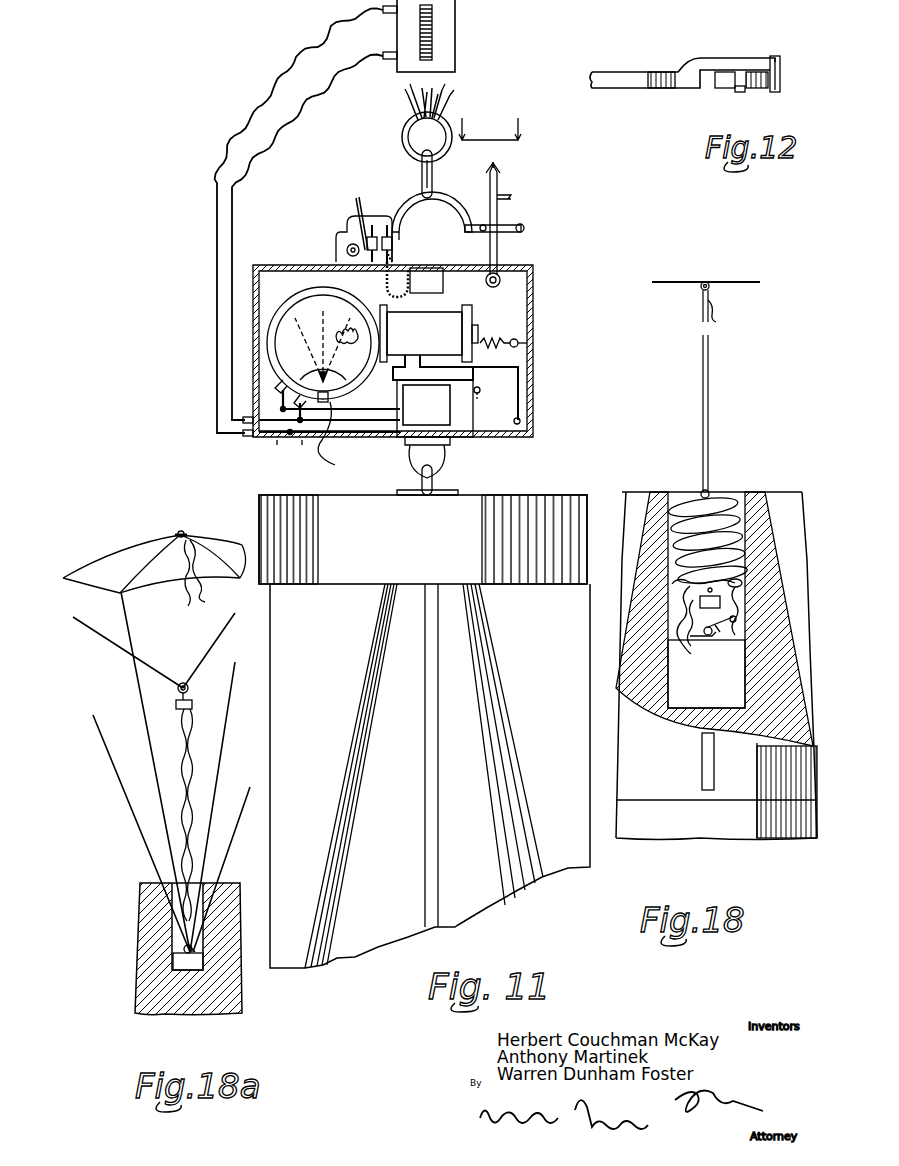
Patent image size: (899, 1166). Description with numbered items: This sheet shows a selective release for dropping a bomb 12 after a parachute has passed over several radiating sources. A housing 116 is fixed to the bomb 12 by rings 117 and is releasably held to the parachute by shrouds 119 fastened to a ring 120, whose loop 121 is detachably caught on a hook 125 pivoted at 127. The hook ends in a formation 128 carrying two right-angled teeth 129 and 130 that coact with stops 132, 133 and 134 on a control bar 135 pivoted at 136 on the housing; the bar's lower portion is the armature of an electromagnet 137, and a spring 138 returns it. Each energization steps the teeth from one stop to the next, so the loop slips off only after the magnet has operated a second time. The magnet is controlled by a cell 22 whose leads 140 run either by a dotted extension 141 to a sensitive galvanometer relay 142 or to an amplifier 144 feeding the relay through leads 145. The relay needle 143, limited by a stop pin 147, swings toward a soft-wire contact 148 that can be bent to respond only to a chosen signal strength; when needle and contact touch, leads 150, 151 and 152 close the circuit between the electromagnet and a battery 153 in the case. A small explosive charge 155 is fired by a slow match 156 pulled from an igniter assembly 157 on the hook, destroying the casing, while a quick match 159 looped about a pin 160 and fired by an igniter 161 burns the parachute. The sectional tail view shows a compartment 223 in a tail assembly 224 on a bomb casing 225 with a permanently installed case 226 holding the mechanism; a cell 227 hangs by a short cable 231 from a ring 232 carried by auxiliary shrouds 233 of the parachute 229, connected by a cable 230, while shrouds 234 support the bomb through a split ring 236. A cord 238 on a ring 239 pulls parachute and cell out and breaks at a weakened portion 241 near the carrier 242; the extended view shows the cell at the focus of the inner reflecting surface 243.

In FIG. 11, the cell 22 is at (419, 36).
In FIG. 11, the leads 140 is at (217, 205).
In FIG. 11, the housing 116 is at (253, 290).
In FIG. 11, the sensitive relay 142 is at (393, 351).
In FIG. 11, the relay needle 143 is at (336, 325).
In FIG. 11, the stop pin 147 is at (310, 341).
In FIG. 11, the contact 148 is at (345, 343).
In FIG. 11, the leads 145 is at (378, 410).
In FIG. 11, the lead 152 is at (339, 433).
In FIG. 11, the extension 141 is at (298, 447).
In FIG. 11, the electromagnet 137 is at (429, 333).
In FIG. 11, the lead 150 is at (450, 385).
In FIG. 11, the lead 151 is at (516, 370).
In FIG. 11, the amplifier 144 is at (435, 408).
In FIG. 11, the battery 153 is at (497, 405).
In FIG. 11, the explosive charge 155 is at (426, 280).
In FIG. 11, the slow match 156 is at (385, 290).
In FIG. 11, the pivot 136 is at (500, 279).
In FIG. 11, the stop 132 is at (488, 215).
In FIG. 11, the stop 134 is at (492, 165).
In FIG. 12, the stop 134 is at (723, 88).
In FIG. 11, the control bar 135 is at (500, 175).
In FIG. 12, the control bar 135 is at (758, 88).
In FIG. 11, the stop 133 is at (512, 197).
In FIG. 11, the formation 128 is at (524, 240).
In FIG. 12, the formation 128 is at (733, 60).
In FIG. 11, the tooth 129 is at (522, 222).
In FIG. 12, the tooth 129 is at (775, 78).
In FIG. 11, the tooth 130 is at (485, 231).
In FIG. 12, the tooth 130 is at (742, 92).
In FIG. 11, the spring 138 is at (519, 340).
In FIG. 11, the shrouds 119 is at (405, 111).
In FIG. 11, the ring 120 is at (402, 142).
In FIG. 11, the loop 121 is at (421, 171).
In FIG. 11, the hook 125 is at (407, 210).
In FIG. 12, the hook 125 is at (682, 74).
In FIG. 11, the bomb 12 is at (424, 531).
In FIG. 11, the rings 117 is at (452, 474).
In FIG. 11, the igniter 161 is at (392, 220).
In FIG. 11, the pivot 127 is at (346, 249).
In FIG. 11, the igniter assembly 157 is at (393, 244).
In FIG. 11, the quick match 159 is at (356, 222).
In FIG. 11, the pin 160 is at (390, 258).
In FIG. 18, the tail assembly 224 is at (716, 666).
In FIG. 18A, the tail assembly 224 is at (143, 915).
In FIG. 18, the case 226 is at (706, 674).
In FIG. 18A, the case 226 is at (188, 962).
In FIG. 18, the bomb casing 225 is at (637, 842).
In FIG. 18A, the bomb casing 225 is at (141, 1026).
In FIG. 18, the cord 238 is at (702, 415).
In FIG. 18A, the cord 238 is at (190, 595).
In FIG. 18, the carrier 242 is at (672, 284).
In FIG. 18, the ring 239 is at (710, 290).
In FIG. 18, the weakened portion 241 is at (716, 318).
In FIG. 18A, the weakened portion 241 is at (208, 603).
In FIG. 18, the compartment 223 is at (688, 498).
In FIG. 18, the parachute 229 is at (707, 540).
In FIG. 18A, the parachute 229 is at (170, 551).
In FIG. 18, the ring 232 is at (680, 580).
In FIG. 18A, the ring 232 is at (188, 690).
In FIG. 18, the auxiliary shrouds 233 is at (684, 592).
In FIG. 18A, the auxiliary shrouds 233 is at (208, 655).
In FIG. 18, the short cable 231 is at (742, 583).
In FIG. 18A, the short cable 231 is at (178, 690).
In FIG. 18, the cell 227 is at (721, 603).
In FIG. 18A, the cell 227 is at (188, 709).
In FIG. 18, the shrouds 234 is at (688, 618).
In FIG. 18A, the shrouds 234 is at (148, 735).
In FIG. 18, the cable 230 is at (738, 620).
In FIG. 18A, the cable 230 is at (192, 770).
In FIG. 18, the split ring 236 is at (704, 646).
In FIG. 18A, the split ring 236 is at (182, 950).
In FIG. 18A, the inner reflecting surface 243 is at (95, 568).